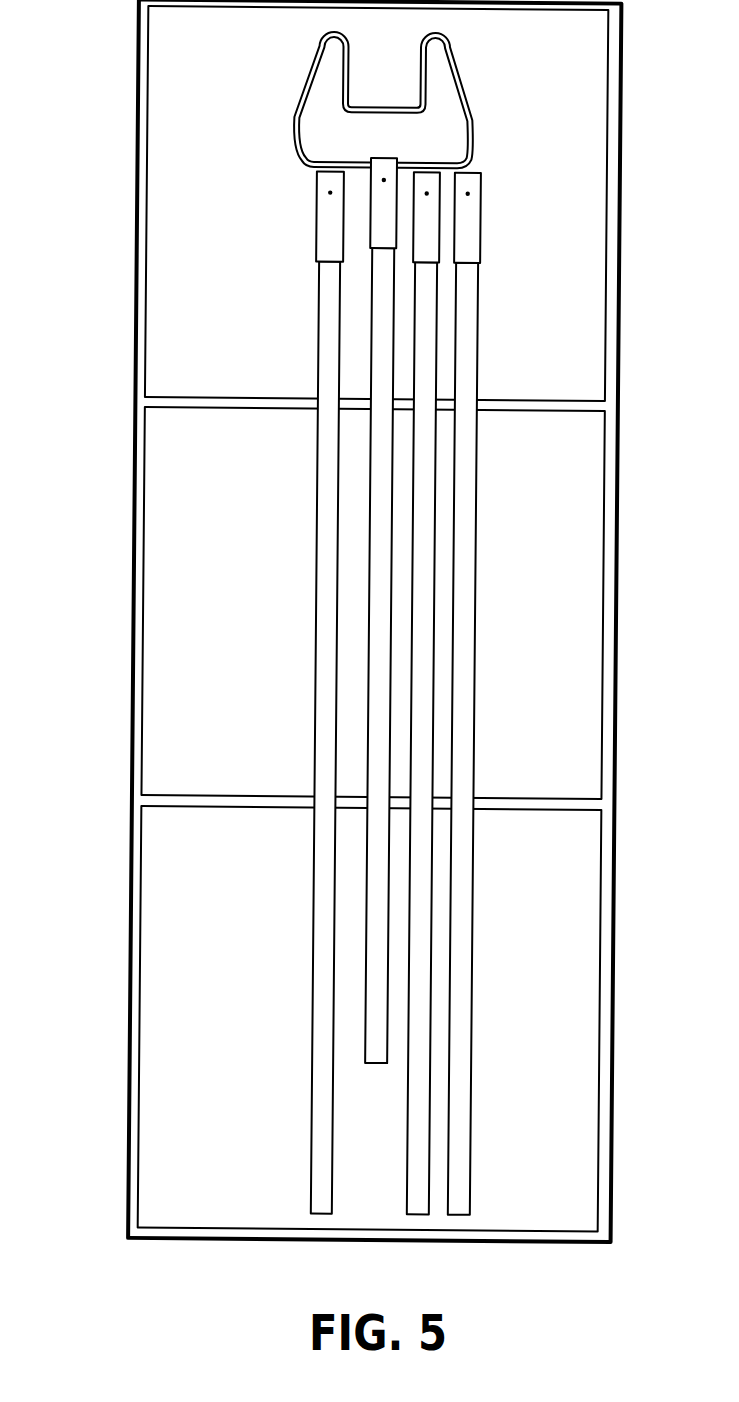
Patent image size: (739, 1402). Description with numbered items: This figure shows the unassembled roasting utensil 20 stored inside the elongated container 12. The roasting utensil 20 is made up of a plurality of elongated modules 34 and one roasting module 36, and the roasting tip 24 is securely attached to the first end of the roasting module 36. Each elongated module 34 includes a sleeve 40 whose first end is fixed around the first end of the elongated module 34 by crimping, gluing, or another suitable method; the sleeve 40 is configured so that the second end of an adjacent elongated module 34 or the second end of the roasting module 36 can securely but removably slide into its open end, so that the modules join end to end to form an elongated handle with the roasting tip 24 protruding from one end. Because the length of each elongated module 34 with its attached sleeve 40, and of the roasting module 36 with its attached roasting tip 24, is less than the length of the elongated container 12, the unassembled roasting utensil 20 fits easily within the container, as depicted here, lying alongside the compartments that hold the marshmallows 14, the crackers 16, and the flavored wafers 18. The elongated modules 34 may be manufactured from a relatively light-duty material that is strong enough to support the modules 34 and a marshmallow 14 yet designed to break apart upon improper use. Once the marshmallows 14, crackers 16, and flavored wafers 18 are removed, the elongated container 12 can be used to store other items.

The elongated container 12 is at (131, 515).
The marshmallow 14 is at (200, 262).
The crackers 16 is at (237, 595).
The flavored wafers 18 is at (236, 906).
The roasting utensil 20 is at (357, 181).
The roasting tip 24 is at (303, 78).
The elongated modules 34 is at (315, 488).
The roasting module 36 is at (368, 503).
The sleeve 40 is at (366, 193).